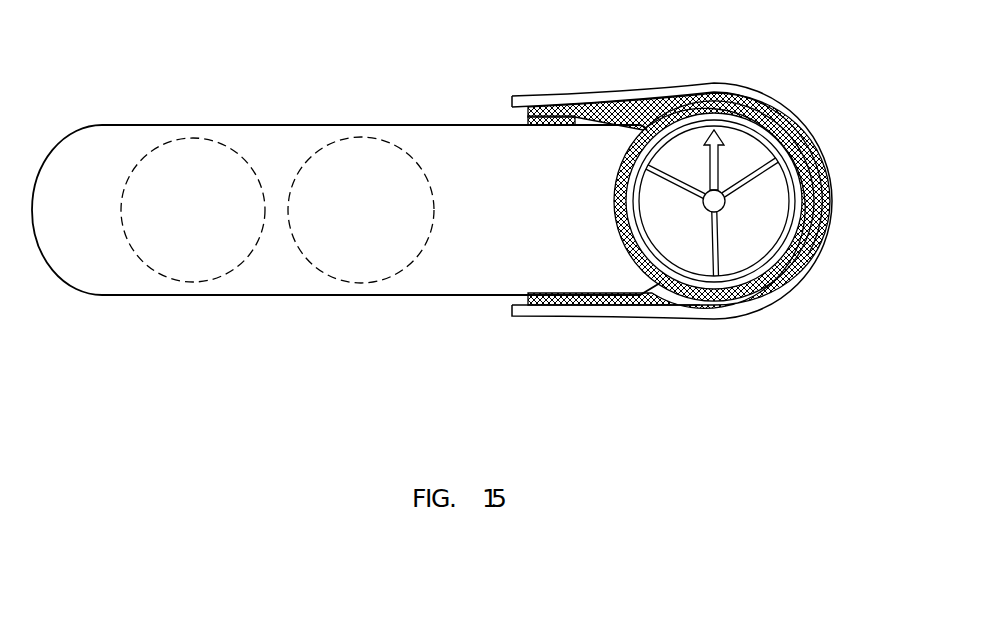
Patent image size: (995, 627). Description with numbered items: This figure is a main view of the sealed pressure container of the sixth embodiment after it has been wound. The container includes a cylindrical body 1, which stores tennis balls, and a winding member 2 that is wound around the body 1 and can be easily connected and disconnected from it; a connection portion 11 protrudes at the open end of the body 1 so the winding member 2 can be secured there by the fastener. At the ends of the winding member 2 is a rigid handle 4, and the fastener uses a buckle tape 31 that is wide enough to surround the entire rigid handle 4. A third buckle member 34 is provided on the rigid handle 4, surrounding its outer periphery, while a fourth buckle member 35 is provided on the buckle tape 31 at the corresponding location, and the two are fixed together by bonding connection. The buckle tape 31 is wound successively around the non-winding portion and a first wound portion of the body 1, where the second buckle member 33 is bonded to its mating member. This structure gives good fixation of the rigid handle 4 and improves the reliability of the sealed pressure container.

The body 1 is at (140, 125).
The connection portion 11 is at (207, 163).
The winding member 2 is at (722, 205).
The rigid handle 4 is at (782, 152).
The buckle tape 31 is at (553, 100).
The second buckle member 33 is at (527, 122).
The third buckle member 34 is at (743, 95).
The fourth buckle member 35 is at (627, 110).